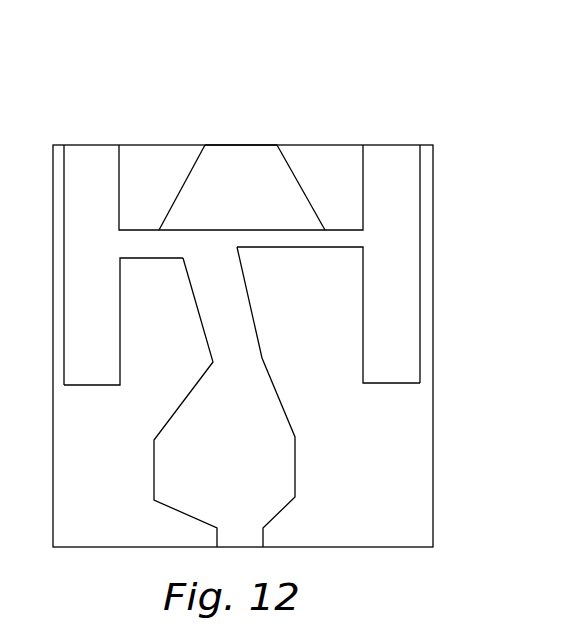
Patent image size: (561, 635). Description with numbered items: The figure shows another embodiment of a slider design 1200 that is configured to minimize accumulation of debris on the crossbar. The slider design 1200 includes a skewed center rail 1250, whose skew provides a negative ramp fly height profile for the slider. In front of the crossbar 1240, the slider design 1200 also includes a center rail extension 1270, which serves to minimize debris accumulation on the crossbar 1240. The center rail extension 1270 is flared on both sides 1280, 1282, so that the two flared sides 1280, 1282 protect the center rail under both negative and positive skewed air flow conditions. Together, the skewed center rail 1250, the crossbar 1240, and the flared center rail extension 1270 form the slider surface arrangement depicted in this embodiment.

The slider design 1200 is at (432, 82).
The center rail extension 1270 is at (237, 138).
The flared side 1280 is at (194, 163).
The flared side 1282 is at (288, 162).
The skewed center rail 1250 is at (191, 287).
The crossbar 1240 is at (327, 248).